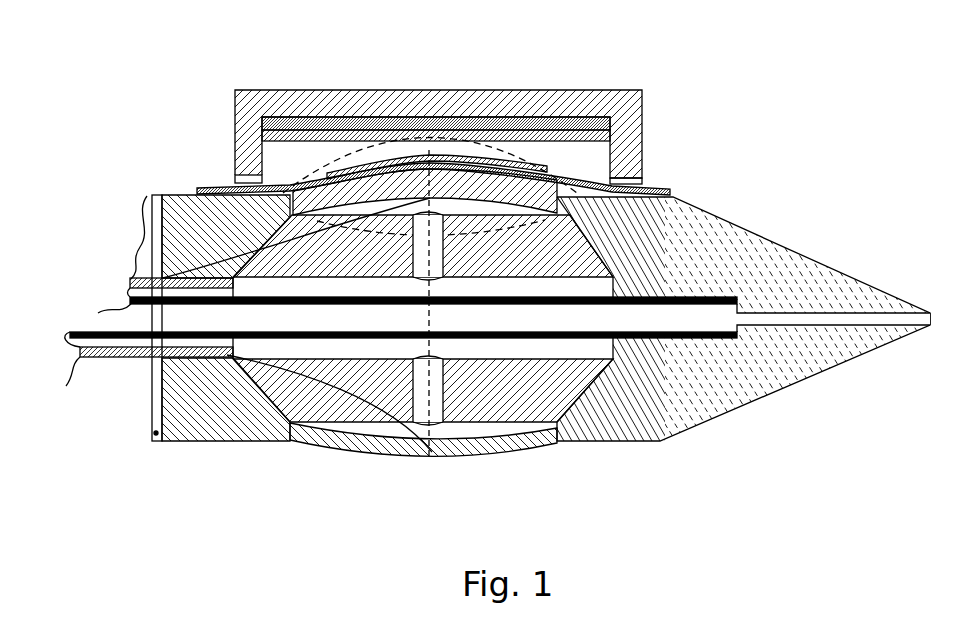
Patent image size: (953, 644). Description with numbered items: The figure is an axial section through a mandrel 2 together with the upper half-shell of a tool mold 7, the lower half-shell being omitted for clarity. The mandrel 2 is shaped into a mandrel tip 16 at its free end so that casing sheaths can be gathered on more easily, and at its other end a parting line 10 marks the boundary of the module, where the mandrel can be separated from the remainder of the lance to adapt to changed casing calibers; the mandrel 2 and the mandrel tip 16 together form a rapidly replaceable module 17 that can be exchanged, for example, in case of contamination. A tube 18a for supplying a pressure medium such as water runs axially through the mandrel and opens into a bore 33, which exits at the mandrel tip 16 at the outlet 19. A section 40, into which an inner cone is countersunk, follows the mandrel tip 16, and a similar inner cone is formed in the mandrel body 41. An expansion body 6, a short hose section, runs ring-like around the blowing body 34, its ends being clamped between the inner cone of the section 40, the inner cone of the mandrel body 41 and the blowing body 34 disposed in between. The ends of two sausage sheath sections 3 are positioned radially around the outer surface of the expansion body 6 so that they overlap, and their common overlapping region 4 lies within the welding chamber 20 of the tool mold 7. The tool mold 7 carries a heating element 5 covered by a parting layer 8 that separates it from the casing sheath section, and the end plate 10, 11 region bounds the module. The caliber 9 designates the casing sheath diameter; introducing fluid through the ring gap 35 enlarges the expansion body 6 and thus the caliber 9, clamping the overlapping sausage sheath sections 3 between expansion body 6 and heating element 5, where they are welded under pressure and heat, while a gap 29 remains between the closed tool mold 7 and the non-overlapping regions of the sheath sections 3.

The mandrel 2 is at (484, 306).
The sausage sheath section 3 is at (210, 190).
The overlapping region 4 is at (523, 142).
The heating element 5 is at (297, 122).
The expansion body 6 is at (298, 341).
The tool mold 7 is at (449, 105).
The parting layer 8 is at (425, 136).
The caliber 9 is at (427, 407).
The parting line 10 is at (131, 348).
The end face 11 is at (156, 433).
The mandrel tip 16 is at (743, 313).
The module 17 is at (743, 331).
The tube 18a is at (140, 357).
The outlet opening 19 is at (930, 330).
The welding chamber 20 is at (612, 142).
The gap 29 is at (224, 178).
The bore 33 is at (870, 317).
The blowing body 34 is at (310, 428).
The ring gap 35 is at (78, 352).
The section 40 is at (610, 410).
The mandrel body 41 is at (240, 418).